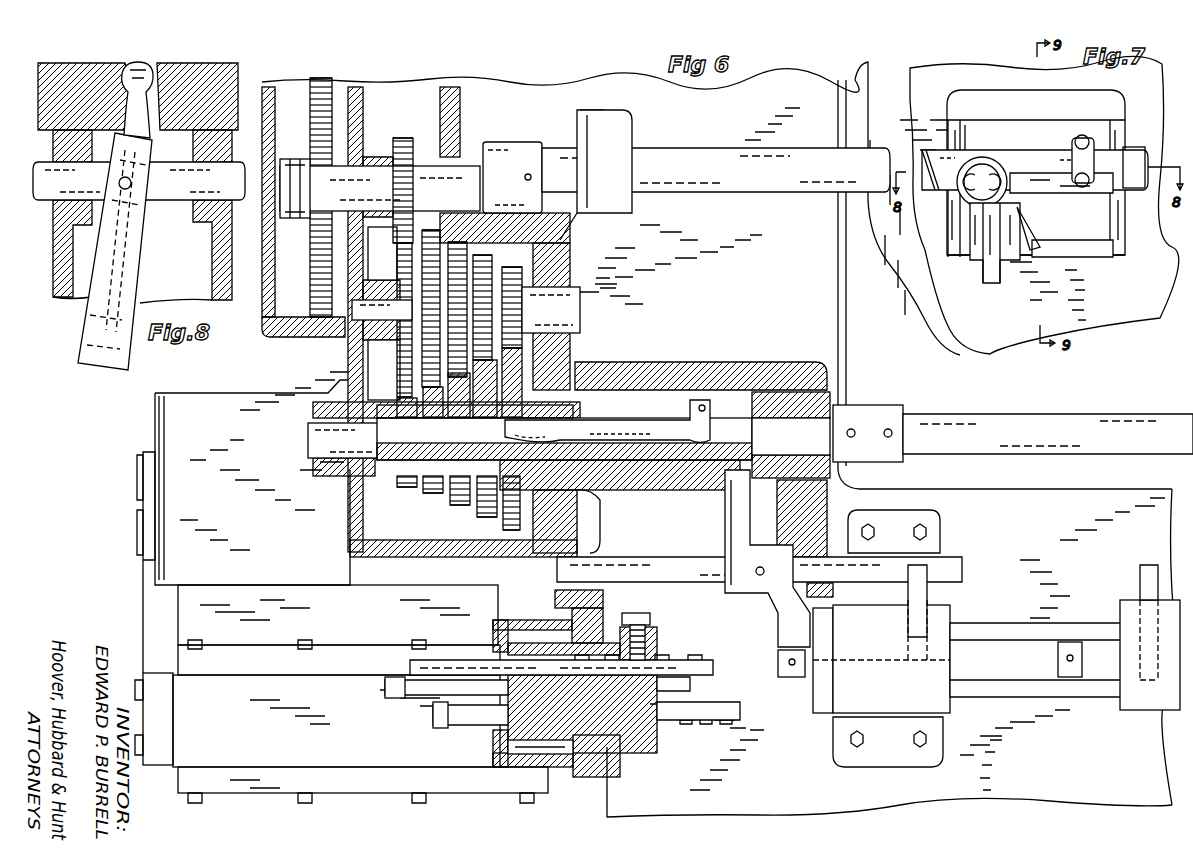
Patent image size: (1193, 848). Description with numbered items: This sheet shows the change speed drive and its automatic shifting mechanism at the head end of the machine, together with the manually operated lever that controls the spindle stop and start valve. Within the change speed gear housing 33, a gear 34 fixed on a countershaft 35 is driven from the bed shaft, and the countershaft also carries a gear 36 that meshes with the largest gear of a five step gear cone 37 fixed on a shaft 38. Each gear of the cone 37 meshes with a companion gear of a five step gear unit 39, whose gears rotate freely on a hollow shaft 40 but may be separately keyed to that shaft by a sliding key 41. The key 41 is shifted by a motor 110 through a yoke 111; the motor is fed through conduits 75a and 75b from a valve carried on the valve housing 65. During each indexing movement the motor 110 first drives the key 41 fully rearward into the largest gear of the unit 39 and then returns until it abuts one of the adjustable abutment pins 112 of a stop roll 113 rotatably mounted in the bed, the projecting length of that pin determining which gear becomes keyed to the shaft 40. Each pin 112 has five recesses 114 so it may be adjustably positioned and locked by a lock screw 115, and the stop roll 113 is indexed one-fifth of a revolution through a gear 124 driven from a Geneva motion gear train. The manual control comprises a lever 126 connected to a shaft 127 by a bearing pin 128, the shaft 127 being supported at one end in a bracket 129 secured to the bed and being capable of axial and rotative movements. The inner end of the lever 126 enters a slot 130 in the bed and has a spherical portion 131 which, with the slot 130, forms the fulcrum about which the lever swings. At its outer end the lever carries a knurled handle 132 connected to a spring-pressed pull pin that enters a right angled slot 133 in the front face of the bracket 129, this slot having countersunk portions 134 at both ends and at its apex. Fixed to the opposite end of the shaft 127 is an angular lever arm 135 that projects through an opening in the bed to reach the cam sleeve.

In FIG. 6, the change speed gear housing 33 is at (268, 323).
In FIG. 6, the gear 34 is at (312, 276).
In FIG. 6, the countershaft 35 is at (371, 170).
In FIG. 6, the gear 36 is at (406, 138).
In FIG. 6, the gear cone 37 is at (465, 256).
In FIG. 6, the shaft 38 is at (577, 305).
In FIG. 6, the five step gear unit 39 is at (455, 487).
In FIG. 6, the hollow shaft 40 is at (630, 455).
In FIG. 6, the sliding key 41 is at (633, 425).
In FIG. 6, the valve housing 65 is at (341, 591).
In FIG. 6, the conduit 75a is at (1140, 582).
In FIG. 6, the conduit 75b is at (935, 585).
In FIG. 6, the motor 110 is at (1040, 675).
In FIG. 6, the yoke 111 is at (770, 545).
In FIG. 6, the adjustable abutment pin 112 is at (710, 660).
In FIG. 6, the stop roll 113 is at (640, 752).
In FIG. 6, the recess 114 is at (665, 660).
In FIG. 6, the lock screw 115 is at (650, 635).
In FIG. 6, the gear 124 is at (562, 768).
In FIG. 7, the lever 126 is at (1003, 272).
In FIG. 8, the lever 126 is at (98, 321).
In FIG. 6, the shaft 127 is at (742, 168).
In FIG. 7, the shaft 127 is at (930, 152).
In FIG. 8, the shaft 127 is at (175, 202).
In FIG. 8, the bearing pin 128 is at (131, 183).
In FIG. 7, the bracket 129 is at (1117, 108).
In FIG. 8, the bracket 129 is at (220, 267).
In FIG. 8, the slot 130 is at (160, 68).
In FIG. 8, the spherical portion 131 is at (130, 65).
In FIG. 7, the knurled handle 132 is at (980, 167).
In FIG. 7, the right angled slot 133 is at (1037, 178).
In FIG. 7, the countersunk portions 134 is at (1088, 178).
In FIG. 6, the angular lever arm 135 is at (512, 142).